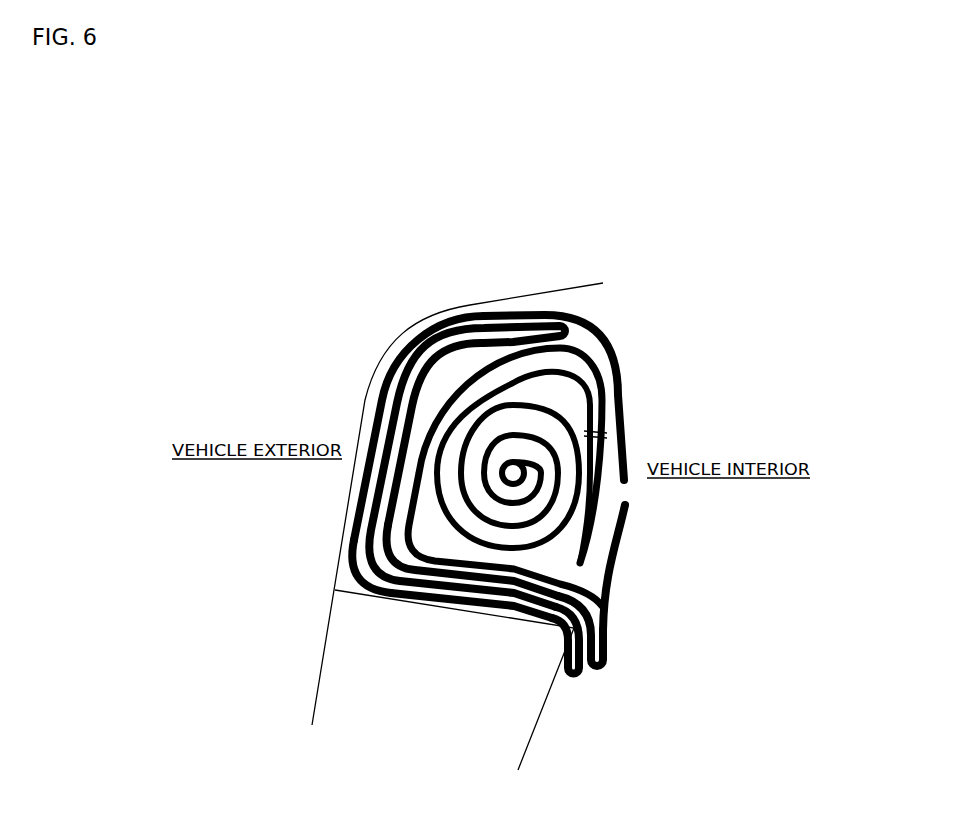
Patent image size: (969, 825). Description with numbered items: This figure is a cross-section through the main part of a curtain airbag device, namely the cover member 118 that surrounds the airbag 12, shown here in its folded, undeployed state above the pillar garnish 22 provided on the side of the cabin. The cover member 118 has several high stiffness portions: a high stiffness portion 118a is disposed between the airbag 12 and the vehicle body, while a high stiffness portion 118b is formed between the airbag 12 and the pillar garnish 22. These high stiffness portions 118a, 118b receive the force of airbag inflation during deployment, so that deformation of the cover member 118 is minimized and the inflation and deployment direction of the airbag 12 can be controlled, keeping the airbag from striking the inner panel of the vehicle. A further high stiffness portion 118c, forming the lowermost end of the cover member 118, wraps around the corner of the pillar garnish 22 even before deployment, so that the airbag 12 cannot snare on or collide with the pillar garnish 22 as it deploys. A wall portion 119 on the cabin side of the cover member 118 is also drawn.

The airbag 12 is at (567, 373).
The pillar garnish 22 is at (535, 748).
The cover member 118 is at (621, 386).
The high stiffness portion 118a is at (380, 380).
The high stiffness portion 118b is at (383, 595).
The high stiffness portion (lowermost end of the cover member) 118c is at (606, 640).
The interior side wall portion 119 is at (626, 506).